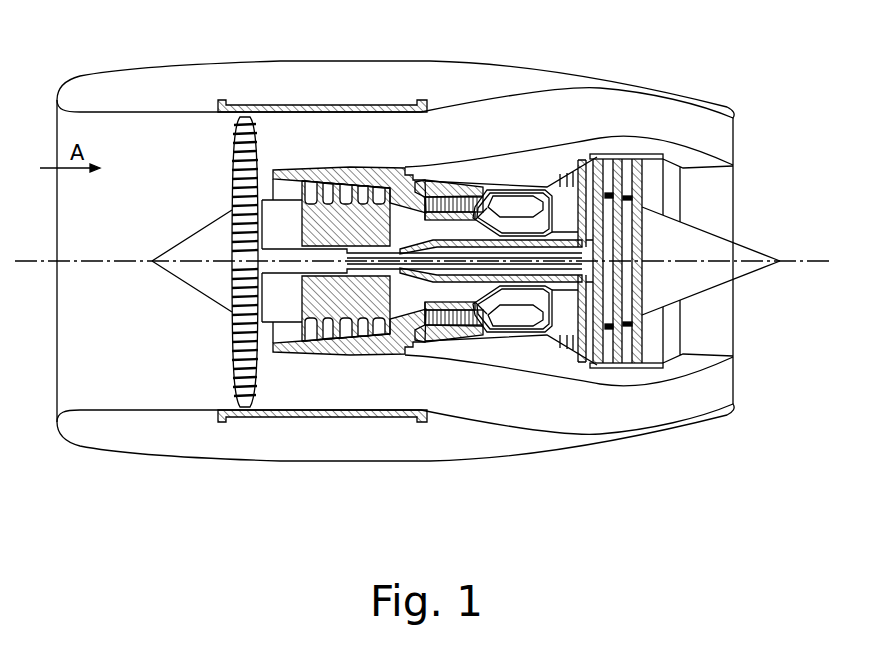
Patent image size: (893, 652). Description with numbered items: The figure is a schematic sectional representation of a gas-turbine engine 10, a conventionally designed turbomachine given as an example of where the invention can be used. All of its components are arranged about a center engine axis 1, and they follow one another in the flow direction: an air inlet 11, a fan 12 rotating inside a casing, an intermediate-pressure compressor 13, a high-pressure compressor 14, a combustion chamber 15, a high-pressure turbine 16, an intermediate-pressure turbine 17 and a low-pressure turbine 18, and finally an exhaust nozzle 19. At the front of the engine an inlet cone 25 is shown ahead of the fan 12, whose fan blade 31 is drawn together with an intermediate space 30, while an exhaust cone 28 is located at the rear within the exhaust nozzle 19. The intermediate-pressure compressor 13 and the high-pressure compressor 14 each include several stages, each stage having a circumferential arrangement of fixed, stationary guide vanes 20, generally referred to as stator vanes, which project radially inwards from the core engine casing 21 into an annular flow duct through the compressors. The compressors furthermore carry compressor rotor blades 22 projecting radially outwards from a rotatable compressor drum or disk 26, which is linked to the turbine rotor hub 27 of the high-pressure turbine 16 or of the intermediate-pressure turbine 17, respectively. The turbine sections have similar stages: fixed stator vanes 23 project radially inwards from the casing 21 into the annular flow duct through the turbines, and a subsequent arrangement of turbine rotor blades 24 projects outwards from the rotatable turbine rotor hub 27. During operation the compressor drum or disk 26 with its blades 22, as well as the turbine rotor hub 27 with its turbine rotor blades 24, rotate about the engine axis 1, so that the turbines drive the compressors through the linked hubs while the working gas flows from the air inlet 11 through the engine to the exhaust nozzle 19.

The engine axis 1 is at (100, 264).
The gas-turbine engine 10 is at (506, 128).
The air inlet 11 is at (172, 135).
The fan 12 is at (250, 128).
The intermediate-pressure compressor 13 is at (355, 187).
The high-pressure compressor 14 is at (452, 196).
The combustion chamber 15 is at (504, 200).
The high-pressure turbine 16 is at (578, 172).
The intermediate-pressure turbine 17 is at (590, 157).
The low-pressure turbine 18 is at (647, 166).
The exhaust nozzle 19 is at (675, 205).
The guide vanes 20 is at (320, 357).
The core engine casing 21 is at (350, 357).
The compressor rotor blades 22 is at (358, 358).
The stator vanes 23 is at (585, 355).
The turbine rotor blades 24 is at (607, 355).
The inlet cone 25 is at (197, 273).
The compressor drum or disk 26 is at (395, 355).
The turbine rotor hub 27 is at (643, 268).
The exhaust cone 28 is at (747, 250).
The intermediate space 30 is at (233, 244).
The fan blade 31 is at (238, 385).